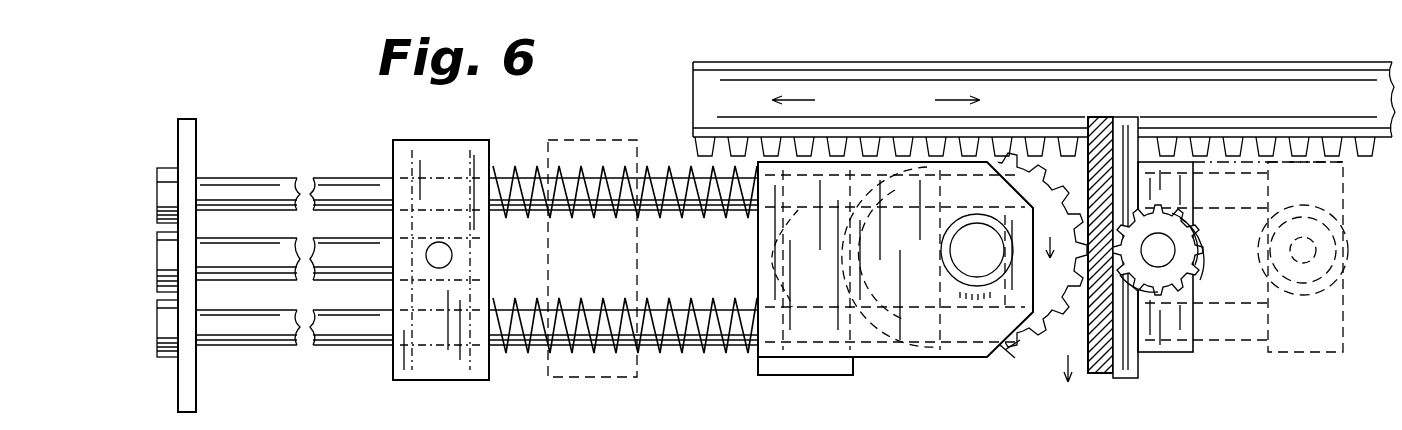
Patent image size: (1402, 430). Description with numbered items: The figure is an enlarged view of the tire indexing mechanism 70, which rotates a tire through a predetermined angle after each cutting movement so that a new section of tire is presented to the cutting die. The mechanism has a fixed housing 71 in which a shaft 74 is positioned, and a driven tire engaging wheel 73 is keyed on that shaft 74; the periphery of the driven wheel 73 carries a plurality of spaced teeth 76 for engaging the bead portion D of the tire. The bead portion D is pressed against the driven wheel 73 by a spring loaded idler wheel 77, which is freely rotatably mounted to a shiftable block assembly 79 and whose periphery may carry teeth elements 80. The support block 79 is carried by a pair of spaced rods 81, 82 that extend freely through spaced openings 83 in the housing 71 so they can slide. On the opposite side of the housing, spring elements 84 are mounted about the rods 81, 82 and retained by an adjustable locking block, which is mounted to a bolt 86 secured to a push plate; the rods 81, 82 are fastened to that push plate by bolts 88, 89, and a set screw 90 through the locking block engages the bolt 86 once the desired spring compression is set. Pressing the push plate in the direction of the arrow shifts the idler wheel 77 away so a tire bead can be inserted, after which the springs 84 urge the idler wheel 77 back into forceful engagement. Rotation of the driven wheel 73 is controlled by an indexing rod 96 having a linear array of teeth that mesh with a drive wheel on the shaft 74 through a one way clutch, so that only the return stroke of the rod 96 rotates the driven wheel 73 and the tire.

The indexing mechanism 70 is at (834, 388).
The fixed housing 71 is at (886, 362).
The driven tire engaging wheel 73 is at (1026, 342).
The shaft 74 is at (967, 247).
The teeth 76 is at (1012, 150).
The idler wheel 77 is at (1197, 240).
The shiftable block assembly 79 is at (1168, 342).
The teeth elements 80 is at (1163, 277).
The rod 81 is at (668, 178).
The rod 82 is at (705, 335).
The spaced openings 83 is at (768, 243).
The spring elements 84 is at (520, 188).
The bolt 86 is at (208, 270).
The bolt 88 is at (156, 252).
The bolt 89 is at (165, 166).
The set screw 90 is at (456, 228).
The indexing rod 96 is at (1243, 77).
The bead portion D is at (1125, 93).